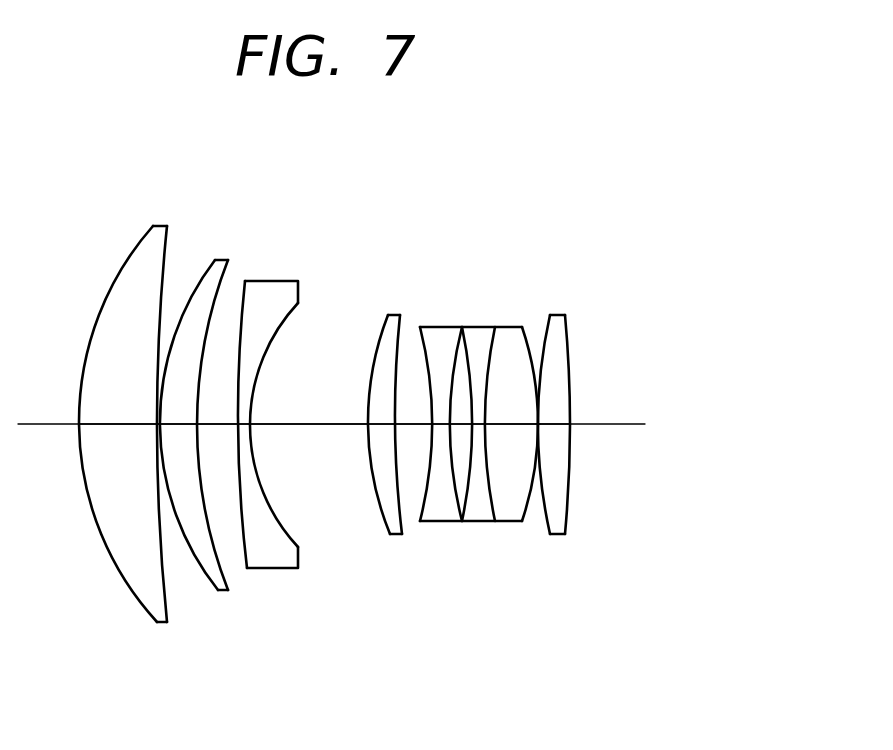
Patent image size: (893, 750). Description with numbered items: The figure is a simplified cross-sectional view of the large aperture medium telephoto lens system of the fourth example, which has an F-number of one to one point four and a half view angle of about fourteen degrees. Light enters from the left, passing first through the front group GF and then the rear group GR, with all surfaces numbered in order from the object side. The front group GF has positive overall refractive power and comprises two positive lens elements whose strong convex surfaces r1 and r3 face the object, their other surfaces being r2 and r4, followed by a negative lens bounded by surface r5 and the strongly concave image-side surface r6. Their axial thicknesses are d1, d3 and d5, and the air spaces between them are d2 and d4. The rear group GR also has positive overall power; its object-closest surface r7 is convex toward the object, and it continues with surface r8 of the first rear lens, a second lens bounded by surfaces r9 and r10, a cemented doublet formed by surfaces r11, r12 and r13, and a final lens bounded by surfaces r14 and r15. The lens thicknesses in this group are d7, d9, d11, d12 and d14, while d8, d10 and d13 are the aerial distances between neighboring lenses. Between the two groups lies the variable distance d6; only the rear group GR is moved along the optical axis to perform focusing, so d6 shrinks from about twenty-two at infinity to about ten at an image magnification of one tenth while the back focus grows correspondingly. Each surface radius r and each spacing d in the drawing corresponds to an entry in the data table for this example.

The front group GF is at (303, 167).
The rear group GR is at (635, 167).
The first lens surface r1 is at (153, 226).
The second lens surface r2 is at (167, 226).
The third lens surface r3 is at (215, 260).
The fourth lens surface r4 is at (228, 260).
The fifth lens surface r5 is at (245, 281).
The sixth lens surface r6 is at (298, 281).
The seventh lens surface r7 is at (388, 315).
The eighth lens surface r8 is at (400, 315).
The ninth lens surface r9 is at (421, 327).
The tenth lens surface r10 is at (462, 327).
The eleventh lens surface r11 is at (463, 327).
The twelfth lens surface r12 is at (495, 327).
The thirteenth lens surface r13 is at (522, 327).
The fourteenth lens surface r14 is at (550, 315).
The fifteenth lens surface r15 is at (565, 315).
The thickness of first lens d1 is at (120, 424).
The aerial distance between first and second lenses d2 is at (153, 424).
The thickness of second lens d3 is at (182, 424).
The aerial distance between second and third lenses d4 is at (222, 424).
The thickness of third lens d5 is at (245, 424).
The variable aerial distance between front and rear groups d6 is at (327, 424).
The thickness of fourth lens d7 is at (380, 424).
The aerial distance between fourth and fifth lenses d8 is at (413, 424).
The thickness of fifth lens d9 is at (443, 424).
The aerial distance between fifth and sixth lenses d10 is at (462, 424).
The thickness of sixth lens d11 is at (481, 424).
The thickness of seventh lens d12 is at (512, 424).
The aerial distance between seventh and eighth lenses d13 is at (538, 424).
The thickness of eighth lens d14 is at (555, 424).